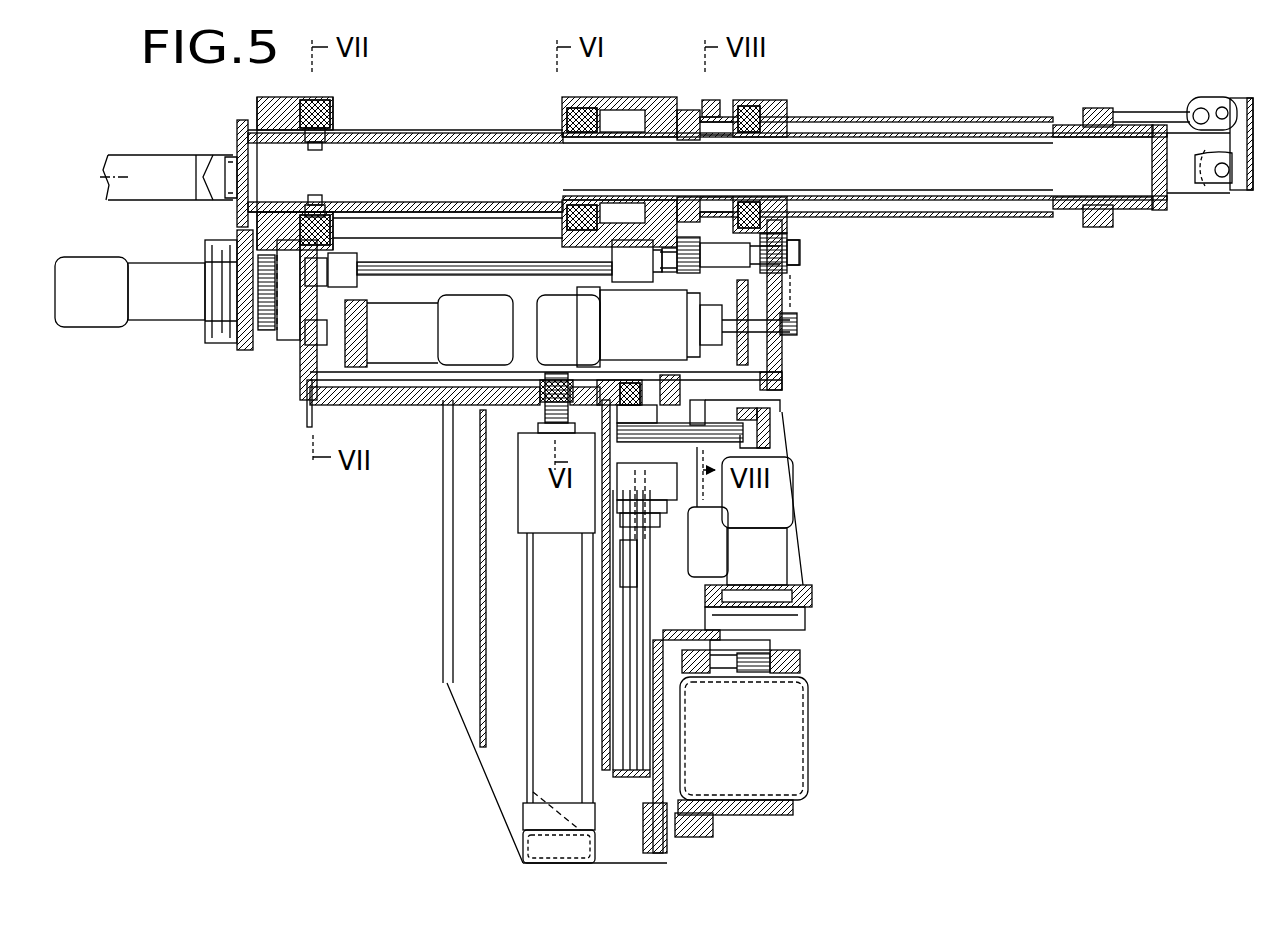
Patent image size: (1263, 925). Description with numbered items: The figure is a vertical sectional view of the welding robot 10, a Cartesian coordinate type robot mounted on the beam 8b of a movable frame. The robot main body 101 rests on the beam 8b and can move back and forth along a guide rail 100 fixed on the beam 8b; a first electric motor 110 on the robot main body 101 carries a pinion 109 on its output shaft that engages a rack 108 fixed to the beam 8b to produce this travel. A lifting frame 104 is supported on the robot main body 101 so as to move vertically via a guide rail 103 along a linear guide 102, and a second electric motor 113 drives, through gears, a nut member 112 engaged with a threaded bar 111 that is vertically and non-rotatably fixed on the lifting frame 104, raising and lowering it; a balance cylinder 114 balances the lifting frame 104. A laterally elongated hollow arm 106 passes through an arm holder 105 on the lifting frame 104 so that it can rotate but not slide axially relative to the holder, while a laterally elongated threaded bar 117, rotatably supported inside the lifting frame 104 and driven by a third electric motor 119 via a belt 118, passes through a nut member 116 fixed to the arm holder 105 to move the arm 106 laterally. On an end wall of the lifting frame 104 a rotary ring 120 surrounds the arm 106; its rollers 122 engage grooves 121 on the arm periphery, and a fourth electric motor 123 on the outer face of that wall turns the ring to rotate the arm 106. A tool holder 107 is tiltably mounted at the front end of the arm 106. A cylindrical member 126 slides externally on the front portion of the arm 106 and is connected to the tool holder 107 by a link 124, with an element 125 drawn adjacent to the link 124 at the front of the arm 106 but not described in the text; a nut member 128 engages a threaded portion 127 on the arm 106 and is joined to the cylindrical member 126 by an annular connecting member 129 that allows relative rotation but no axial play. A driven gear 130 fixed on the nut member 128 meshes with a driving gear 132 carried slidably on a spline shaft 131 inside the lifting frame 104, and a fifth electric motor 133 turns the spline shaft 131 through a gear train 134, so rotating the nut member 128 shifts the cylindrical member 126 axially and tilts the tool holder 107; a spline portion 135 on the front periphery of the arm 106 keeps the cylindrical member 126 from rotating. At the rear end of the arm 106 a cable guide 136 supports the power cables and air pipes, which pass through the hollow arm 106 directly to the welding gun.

The beam 8b is at (808, 737).
The welding robot 10 is at (506, 100).
The guide rail 100 is at (687, 680).
The robot main body 101 is at (775, 440).
The linear guide 102 is at (627, 563).
The guide rail 103 is at (625, 755).
The lifting frame 104 is at (783, 373).
The arm holder 105 is at (627, 78).
The hollow arm 106 is at (890, 118).
The tool holder 107 is at (1253, 98).
The rack 108 is at (803, 663).
The pinion 109 is at (750, 673).
The first electric motor 110 is at (783, 508).
The threaded bar 111 is at (633, 527).
The nut member 112 is at (633, 447).
The second electric motor 113 is at (720, 560).
The balance cylinder 114 is at (540, 705).
The nut member 116 is at (630, 250).
The threaded bar 117 is at (425, 262).
The belt 118 is at (305, 307).
The third electric motor 119 is at (394, 352).
The rotary ring 120 is at (333, 127).
The grooves 121 is at (417, 135).
The rollers 122 is at (315, 147).
The fourth electric motor 123 is at (157, 308).
The link 124 is at (1193, 102).
The ring 125 is at (1120, 107).
The cylindrical member 126 is at (958, 218).
The threaded portion 127 is at (696, 120).
The nut member 128 is at (686, 120).
The annular connecting member 129 is at (787, 100).
The driven gear 130 is at (715, 98).
The spline shaft 131 is at (790, 288).
The driving gear 132 is at (702, 275).
The fifth electric motor 133 is at (545, 303).
The gear train 134 is at (797, 300).
The spline portion 135 is at (1128, 208).
The cable guide 136 is at (212, 152).